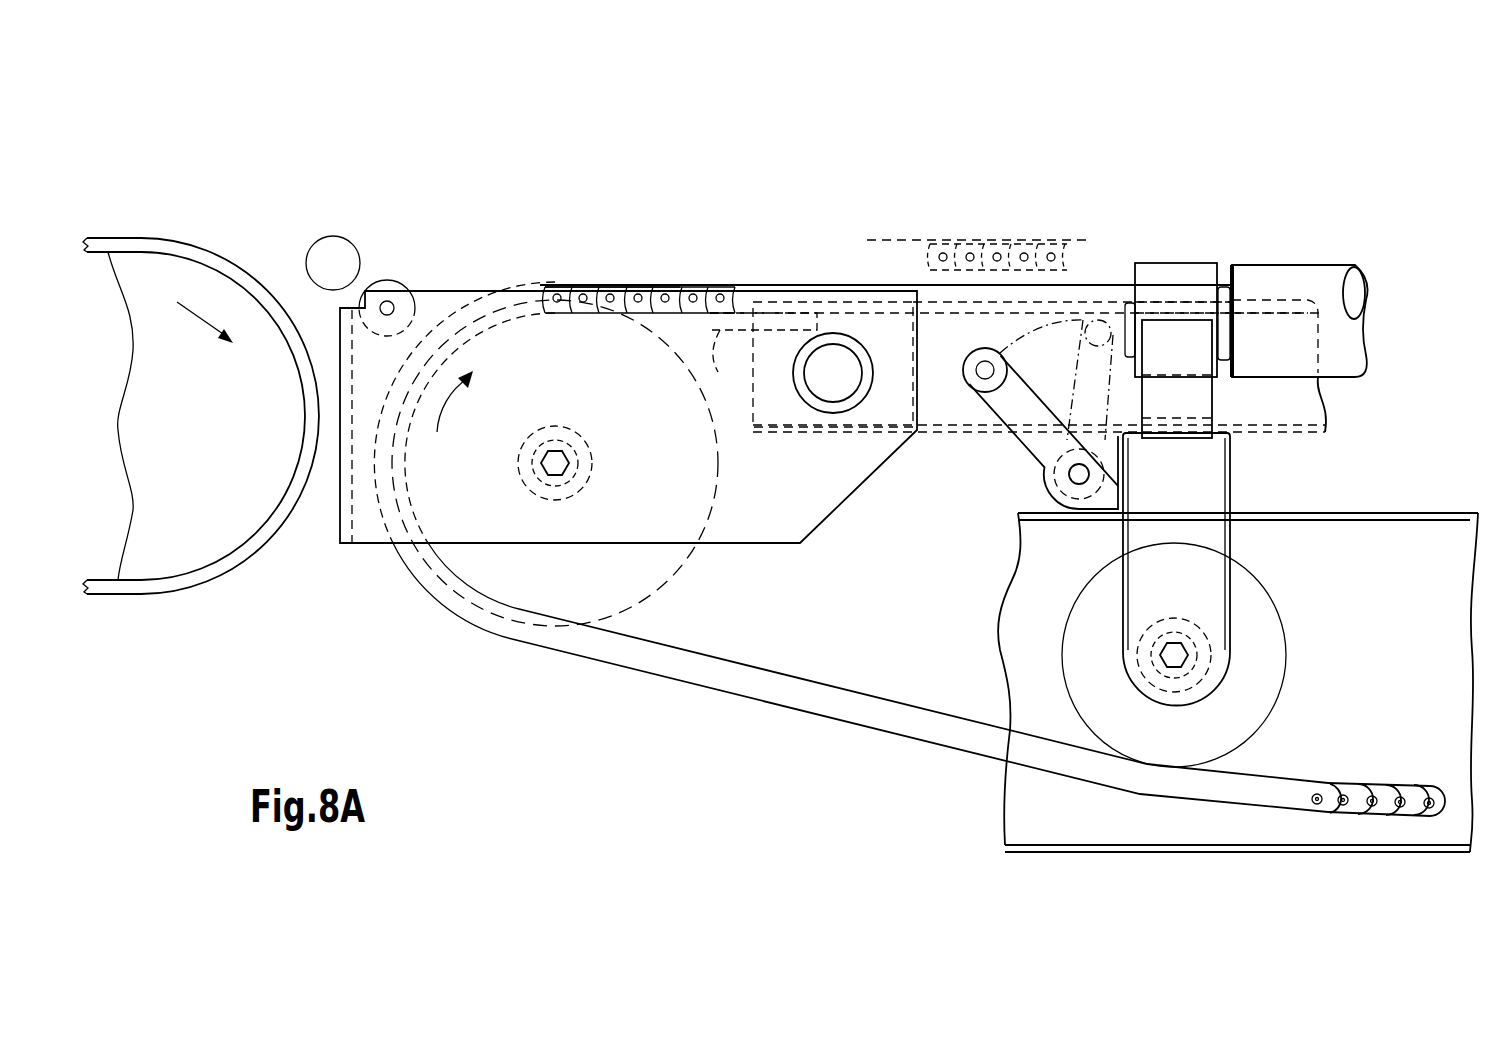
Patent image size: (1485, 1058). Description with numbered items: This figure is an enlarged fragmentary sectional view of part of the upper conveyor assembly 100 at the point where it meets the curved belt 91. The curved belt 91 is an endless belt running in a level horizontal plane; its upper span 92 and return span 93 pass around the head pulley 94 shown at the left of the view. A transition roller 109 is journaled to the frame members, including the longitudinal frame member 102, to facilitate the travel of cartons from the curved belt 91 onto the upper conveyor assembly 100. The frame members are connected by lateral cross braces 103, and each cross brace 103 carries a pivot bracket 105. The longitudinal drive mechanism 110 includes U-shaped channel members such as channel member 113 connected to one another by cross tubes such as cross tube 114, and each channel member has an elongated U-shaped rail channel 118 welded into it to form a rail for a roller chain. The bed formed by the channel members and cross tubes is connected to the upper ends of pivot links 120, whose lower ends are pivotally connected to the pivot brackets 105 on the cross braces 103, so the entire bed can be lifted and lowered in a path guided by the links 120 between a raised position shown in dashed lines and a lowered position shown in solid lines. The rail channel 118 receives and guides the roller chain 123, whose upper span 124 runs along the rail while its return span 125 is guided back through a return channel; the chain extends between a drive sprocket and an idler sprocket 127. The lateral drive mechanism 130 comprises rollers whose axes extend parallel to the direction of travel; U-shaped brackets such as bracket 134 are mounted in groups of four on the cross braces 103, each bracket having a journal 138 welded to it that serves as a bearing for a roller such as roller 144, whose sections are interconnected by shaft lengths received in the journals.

The curved belt 91 is at (237, 250).
The upper span 92 is at (101, 238).
The return span 93 is at (108, 596).
The head pulley 94 is at (207, 530).
The upper conveyor assembly 100 is at (748, 165).
The longitudinal frame member 102 is at (1218, 852).
The cross brace 103 is at (1233, 480).
The pivot bracket 105 is at (1045, 487).
The transition roller 109 is at (397, 287).
The longitudinal drive mechanism 110 is at (599, 274).
The channel member 113 is at (1297, 430).
The cross tube 114 is at (800, 395).
The rail channel 118 is at (721, 331).
The pivot link 120 is at (1020, 447).
The roller chain 123 is at (689, 273).
The upper span 124 is at (1012, 300).
The return span 125 is at (836, 718).
The idler sprocket 127 is at (660, 598).
The lateral drive mechanism 130 is at (1300, 236).
The U-shaped bracket 134 is at (1160, 320).
The journal 138 is at (1193, 272).
The roller 144 is at (1328, 265).